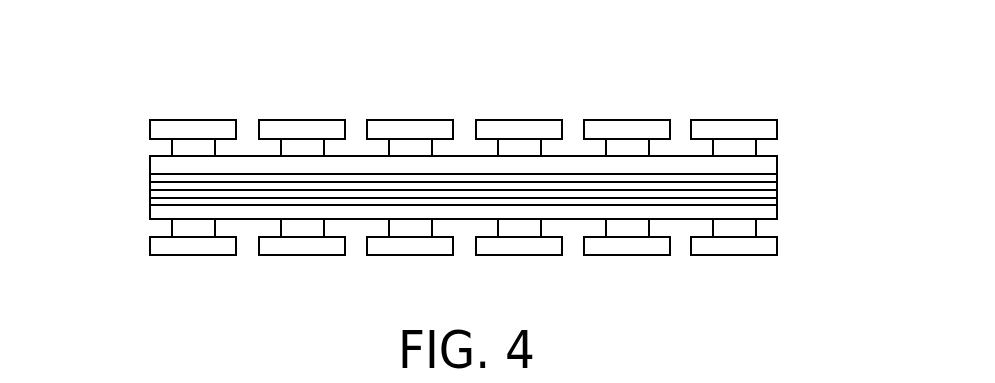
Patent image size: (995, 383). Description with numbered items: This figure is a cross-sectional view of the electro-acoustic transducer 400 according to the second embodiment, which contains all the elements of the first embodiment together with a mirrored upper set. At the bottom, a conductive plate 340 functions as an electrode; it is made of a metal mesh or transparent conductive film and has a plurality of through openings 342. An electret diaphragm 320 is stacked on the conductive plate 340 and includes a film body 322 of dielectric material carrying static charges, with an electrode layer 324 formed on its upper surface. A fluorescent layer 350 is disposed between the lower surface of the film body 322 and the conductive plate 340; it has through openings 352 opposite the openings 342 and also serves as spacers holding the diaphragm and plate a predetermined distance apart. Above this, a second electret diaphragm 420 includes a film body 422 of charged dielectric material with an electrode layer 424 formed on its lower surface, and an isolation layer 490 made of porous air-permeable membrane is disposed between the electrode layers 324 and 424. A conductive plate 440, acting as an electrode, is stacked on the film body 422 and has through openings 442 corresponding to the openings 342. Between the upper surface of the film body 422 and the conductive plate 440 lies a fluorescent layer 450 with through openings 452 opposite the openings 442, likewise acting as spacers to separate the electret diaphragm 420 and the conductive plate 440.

The electro-acoustic transducer 400 is at (776, 74).
The electret diaphragm 420 is at (139, 160).
The film body 422 is at (770, 165).
The electrode layer 424 is at (770, 178).
The isolation layer 490 is at (770, 185).
The electret diaphragm 320 is at (139, 211).
The electrode layer 324 is at (770, 192).
The film body 322 is at (770, 213).
The conductive plate 440 is at (198, 128).
The through openings 442 is at (678, 132).
The fluorescent layer 450 is at (183, 148).
The through openings 452 is at (461, 150).
The conductive plate 340 is at (192, 245).
The through openings 342 is at (352, 247).
The fluorescent layer 350 is at (750, 228).
The through openings 352 is at (573, 227).